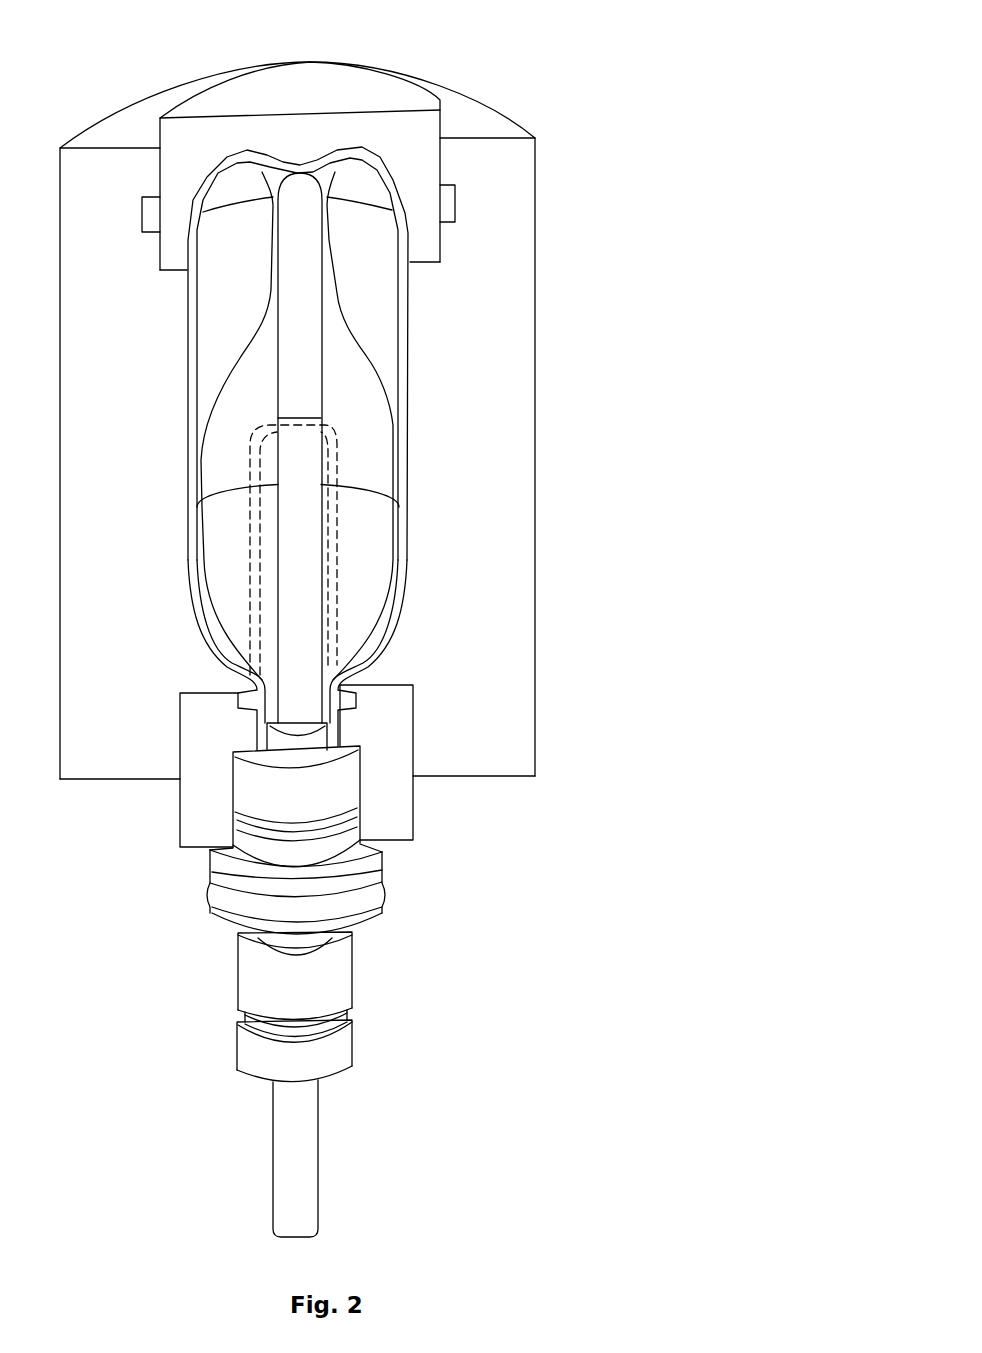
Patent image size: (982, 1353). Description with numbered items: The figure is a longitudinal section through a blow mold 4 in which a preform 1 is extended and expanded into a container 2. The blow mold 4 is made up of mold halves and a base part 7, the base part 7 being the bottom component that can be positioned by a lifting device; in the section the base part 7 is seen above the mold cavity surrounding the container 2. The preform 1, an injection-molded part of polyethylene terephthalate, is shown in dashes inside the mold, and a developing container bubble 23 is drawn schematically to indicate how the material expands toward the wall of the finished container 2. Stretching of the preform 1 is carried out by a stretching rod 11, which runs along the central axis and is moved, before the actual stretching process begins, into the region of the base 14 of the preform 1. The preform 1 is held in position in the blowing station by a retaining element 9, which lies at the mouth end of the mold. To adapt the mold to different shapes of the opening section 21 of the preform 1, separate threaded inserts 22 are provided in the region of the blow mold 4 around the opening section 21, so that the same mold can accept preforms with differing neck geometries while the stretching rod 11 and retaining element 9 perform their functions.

The preform 1 is at (343, 577).
The container 2 is at (403, 362).
The blow mold 4 is at (493, 427).
The base part 7 is at (380, 82).
The retaining element 9 is at (368, 907).
The stretching rod 11 is at (273, 1173).
The base 14 is at (333, 422).
The opening section 21 is at (413, 715).
The threaded inserts 22 is at (397, 802).
The container bubble 23 is at (350, 322).